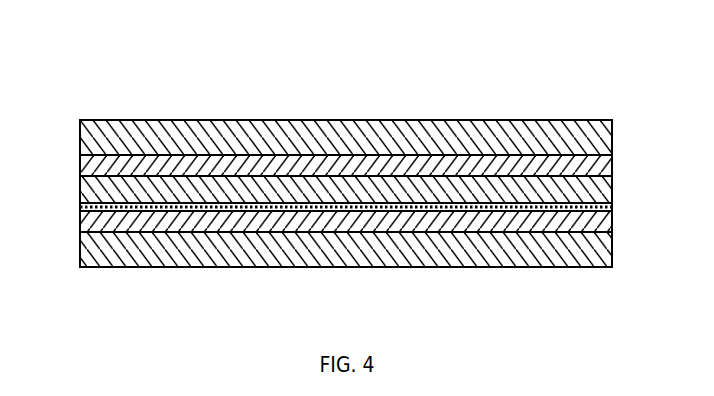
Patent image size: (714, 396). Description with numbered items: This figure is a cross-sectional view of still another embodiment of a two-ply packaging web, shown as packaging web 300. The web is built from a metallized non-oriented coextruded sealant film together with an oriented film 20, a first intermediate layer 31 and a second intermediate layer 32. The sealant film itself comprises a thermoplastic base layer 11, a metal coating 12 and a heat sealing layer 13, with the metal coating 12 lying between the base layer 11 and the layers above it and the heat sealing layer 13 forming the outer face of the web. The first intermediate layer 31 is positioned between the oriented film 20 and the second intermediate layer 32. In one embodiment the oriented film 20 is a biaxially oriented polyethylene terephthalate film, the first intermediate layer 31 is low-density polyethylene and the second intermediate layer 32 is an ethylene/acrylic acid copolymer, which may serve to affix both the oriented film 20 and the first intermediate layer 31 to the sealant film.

The packaging web 300 is at (317, 67).
The oriented film 20 is at (561, 128).
The first intermediate layer 31 is at (142, 158).
The second intermediate layer 32 is at (358, 190).
The metal coating 12 is at (272, 204).
The thermoplastic base layer 11 is at (424, 222).
The heat sealing layer 13 is at (485, 240).